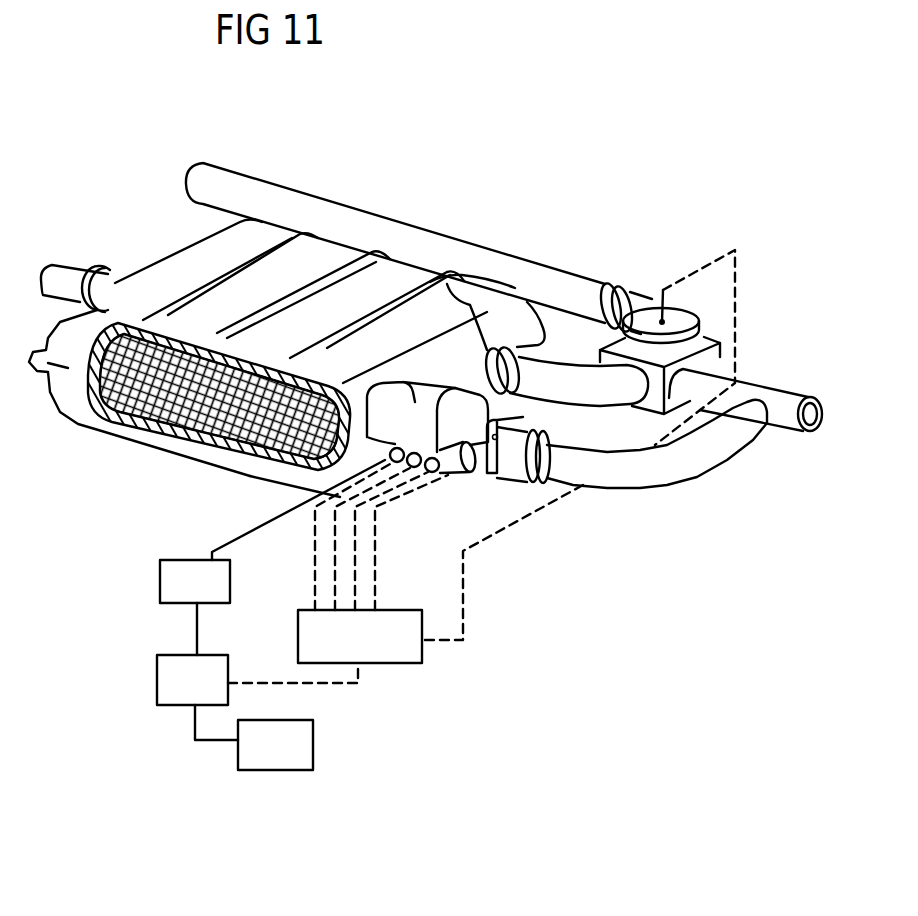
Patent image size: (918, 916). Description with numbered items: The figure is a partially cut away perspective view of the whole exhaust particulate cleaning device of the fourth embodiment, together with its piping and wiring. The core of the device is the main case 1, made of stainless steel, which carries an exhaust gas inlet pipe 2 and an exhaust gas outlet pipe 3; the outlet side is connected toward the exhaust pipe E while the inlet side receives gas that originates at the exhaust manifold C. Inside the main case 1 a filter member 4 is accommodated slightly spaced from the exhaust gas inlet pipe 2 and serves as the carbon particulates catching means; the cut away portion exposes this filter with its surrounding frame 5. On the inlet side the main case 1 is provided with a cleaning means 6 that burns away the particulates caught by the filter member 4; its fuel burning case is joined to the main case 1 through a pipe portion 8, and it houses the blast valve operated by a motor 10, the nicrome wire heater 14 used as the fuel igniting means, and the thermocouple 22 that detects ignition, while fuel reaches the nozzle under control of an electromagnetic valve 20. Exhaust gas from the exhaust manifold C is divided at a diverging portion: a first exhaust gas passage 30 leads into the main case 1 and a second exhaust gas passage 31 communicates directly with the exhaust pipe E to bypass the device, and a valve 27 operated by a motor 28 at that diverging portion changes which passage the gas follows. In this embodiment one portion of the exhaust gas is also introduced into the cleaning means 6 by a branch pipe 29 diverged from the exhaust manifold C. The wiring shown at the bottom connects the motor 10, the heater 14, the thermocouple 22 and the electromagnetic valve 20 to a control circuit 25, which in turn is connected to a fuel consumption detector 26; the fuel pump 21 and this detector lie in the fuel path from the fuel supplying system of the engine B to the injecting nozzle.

The main case 1 is at (87, 430).
The exhaust gas inlet pipe 2 is at (486, 348).
The exhaust gas outlet pipe 3 is at (115, 282).
The filter member 4 is at (150, 440).
The screen frame 5 is at (177, 447).
The cleaning means 6 is at (481, 481).
The pipe portion 8 is at (270, 480).
The motor 10 is at (462, 470).
The nicrome wire heater 14 is at (432, 472).
The electromagnetic valve 20 is at (412, 417).
The fuel pump 21 is at (163, 583).
The thermocouple 22 is at (410, 472).
The control circuit 25 is at (395, 663).
The fuel consumption detector 26 is at (157, 685).
The valve 27 is at (657, 403).
The motor 28 is at (688, 327).
The branch pipe 29 is at (678, 478).
The first exhaust gas passage 30 is at (578, 390).
The second exhaust gas passage 31 is at (413, 233).
The exhaust pipe E is at (66, 276).
The exhaust manifold C is at (765, 390).
The engine B is at (262, 770).